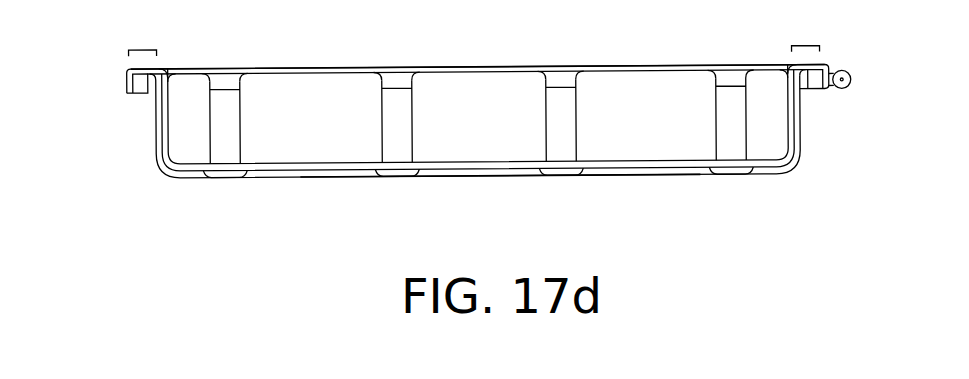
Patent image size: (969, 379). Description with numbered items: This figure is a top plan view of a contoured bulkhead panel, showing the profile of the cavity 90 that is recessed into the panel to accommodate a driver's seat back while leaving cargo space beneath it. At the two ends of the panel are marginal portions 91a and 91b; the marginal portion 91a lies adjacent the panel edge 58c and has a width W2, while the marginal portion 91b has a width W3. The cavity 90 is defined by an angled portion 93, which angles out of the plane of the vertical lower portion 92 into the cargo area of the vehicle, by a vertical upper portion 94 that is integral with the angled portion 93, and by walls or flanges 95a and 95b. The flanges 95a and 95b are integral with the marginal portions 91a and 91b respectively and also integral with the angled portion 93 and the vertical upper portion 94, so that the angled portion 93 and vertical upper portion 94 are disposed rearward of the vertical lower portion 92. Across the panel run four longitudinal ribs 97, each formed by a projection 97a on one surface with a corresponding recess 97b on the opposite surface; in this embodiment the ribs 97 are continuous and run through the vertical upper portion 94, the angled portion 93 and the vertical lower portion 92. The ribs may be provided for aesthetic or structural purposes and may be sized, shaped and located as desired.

The edge 58c is at (130, 68).
The cavity 90 is at (609, 147).
The marginal portion 91a is at (144, 95).
The marginal portion 91b is at (813, 96).
The vertical lower portion 92 is at (590, 69).
The angled portion 93 is at (497, 92).
The vertical upper portion 94 is at (603, 180).
The wall or flange 95a is at (156, 130).
The wall or flange 95b is at (801, 144).
The longitudinal ribs 97 is at (401, 186).
The projections 97a is at (387, 179).
The recesses 97b is at (398, 105).
The width W2 is at (141, 48).
The width W3 is at (806, 49).